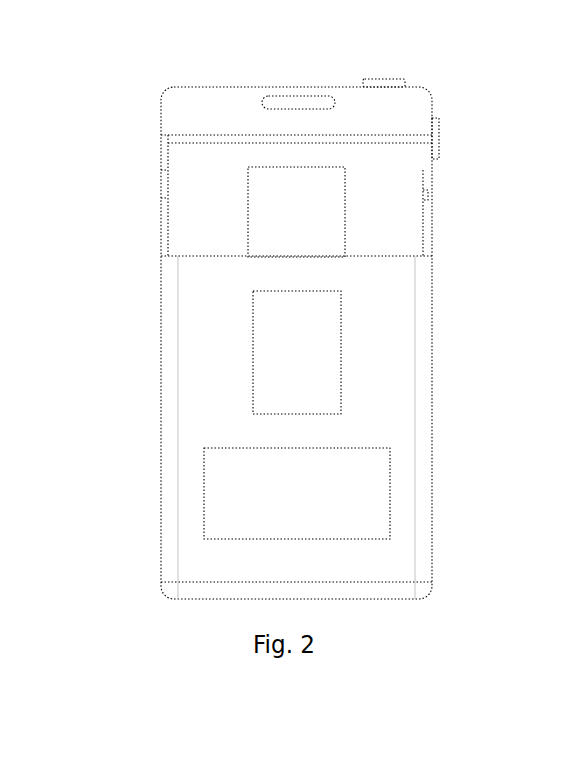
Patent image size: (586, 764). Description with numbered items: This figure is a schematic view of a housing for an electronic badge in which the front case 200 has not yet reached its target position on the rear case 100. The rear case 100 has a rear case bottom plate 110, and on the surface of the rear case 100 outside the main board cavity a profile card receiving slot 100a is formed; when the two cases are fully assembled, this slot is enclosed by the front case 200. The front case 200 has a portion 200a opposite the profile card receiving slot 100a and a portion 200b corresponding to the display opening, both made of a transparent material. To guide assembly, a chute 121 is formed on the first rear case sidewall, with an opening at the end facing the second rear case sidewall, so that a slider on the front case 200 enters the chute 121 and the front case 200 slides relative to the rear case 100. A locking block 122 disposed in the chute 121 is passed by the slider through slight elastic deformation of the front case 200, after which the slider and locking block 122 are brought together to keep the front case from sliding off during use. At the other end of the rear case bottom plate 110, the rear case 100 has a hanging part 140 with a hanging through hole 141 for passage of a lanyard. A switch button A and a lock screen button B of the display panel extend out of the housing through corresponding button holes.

The rear case 100 is at (199, 71).
The rear case bottom plate 110 is at (178, 158).
The chute 121 is at (167, 173).
The locking block 122 is at (160, 198).
The hanging part 140 is at (228, 92).
The hanging through hole 141 is at (301, 101).
The front case 200 is at (213, 352).
The profile card receiving slot 100a is at (312, 213).
The transparent portion opposite the profile card receiving slot 200a is at (320, 352).
The transparent portion corresponding to the display opening 200b is at (322, 502).
The switch button A is at (383, 79).
The lock screen button B is at (437, 138).